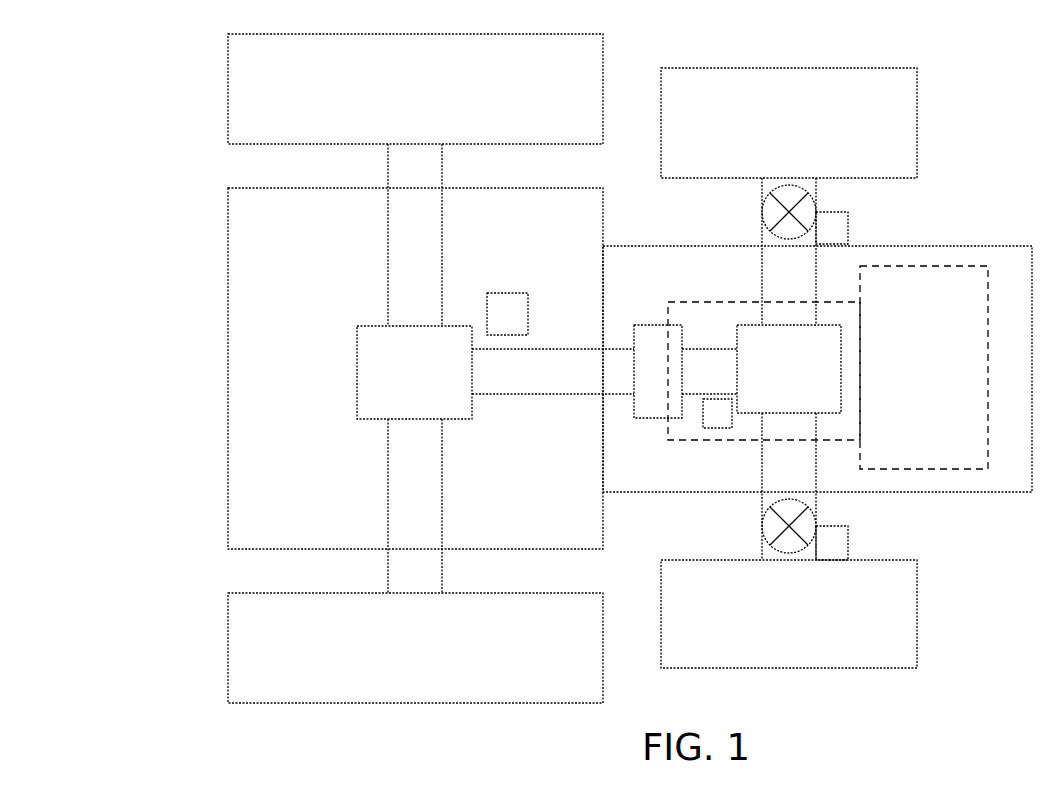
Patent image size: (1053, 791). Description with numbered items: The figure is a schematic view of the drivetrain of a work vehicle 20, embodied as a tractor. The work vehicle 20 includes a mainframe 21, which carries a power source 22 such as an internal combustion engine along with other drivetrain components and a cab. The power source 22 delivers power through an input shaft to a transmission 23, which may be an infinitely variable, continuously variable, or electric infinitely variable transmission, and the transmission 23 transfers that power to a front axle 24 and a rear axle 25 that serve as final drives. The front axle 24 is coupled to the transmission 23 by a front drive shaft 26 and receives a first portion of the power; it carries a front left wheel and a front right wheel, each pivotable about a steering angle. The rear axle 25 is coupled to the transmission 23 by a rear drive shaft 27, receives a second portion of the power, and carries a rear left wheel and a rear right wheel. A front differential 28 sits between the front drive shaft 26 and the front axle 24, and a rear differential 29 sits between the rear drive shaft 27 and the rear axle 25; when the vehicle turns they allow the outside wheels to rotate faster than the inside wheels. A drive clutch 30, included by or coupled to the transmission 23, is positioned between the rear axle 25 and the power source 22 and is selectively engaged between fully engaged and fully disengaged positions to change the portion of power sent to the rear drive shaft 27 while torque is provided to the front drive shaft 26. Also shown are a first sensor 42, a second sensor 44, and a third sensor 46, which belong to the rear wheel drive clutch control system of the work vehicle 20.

The work vehicle 20 is at (138, 283).
The mainframe 21 is at (187, 430).
The power source 22 is at (942, 383).
The transmission 23 is at (719, 338).
The front axle 24 is at (746, 297).
The rear axle 25 is at (350, 489).
The front drive shaft 26 is at (702, 370).
The rear drive shaft 27 is at (535, 388).
The front differential 28 is at (772, 386).
The rear differential 29 is at (430, 389).
The drive clutch 30 is at (643, 418).
The first sensor 42 is at (848, 230).
The second sensor 44 is at (718, 428).
The third sensor 46 is at (528, 313).